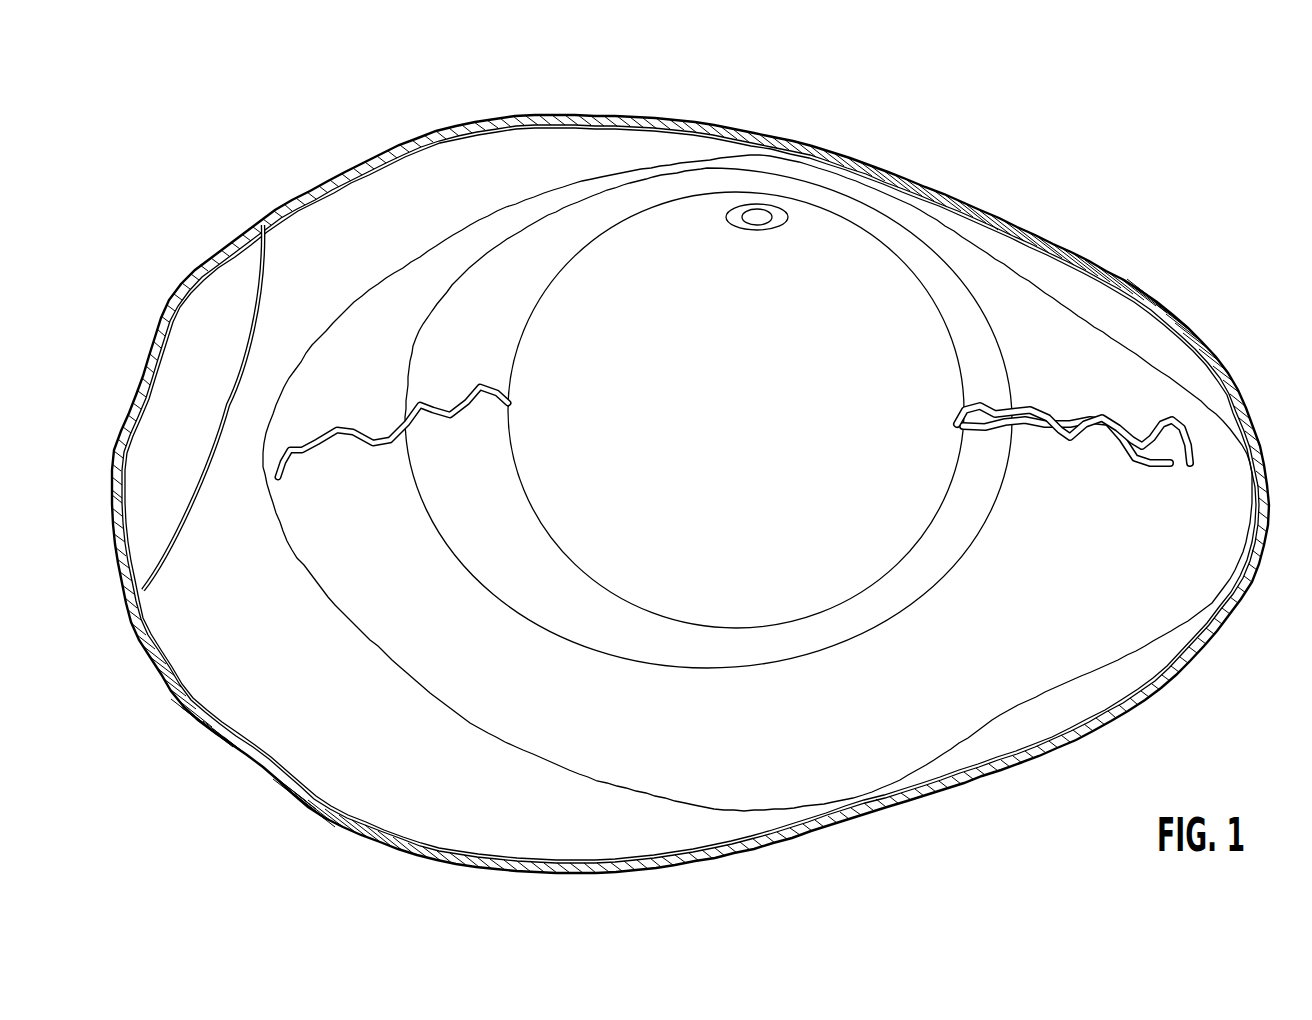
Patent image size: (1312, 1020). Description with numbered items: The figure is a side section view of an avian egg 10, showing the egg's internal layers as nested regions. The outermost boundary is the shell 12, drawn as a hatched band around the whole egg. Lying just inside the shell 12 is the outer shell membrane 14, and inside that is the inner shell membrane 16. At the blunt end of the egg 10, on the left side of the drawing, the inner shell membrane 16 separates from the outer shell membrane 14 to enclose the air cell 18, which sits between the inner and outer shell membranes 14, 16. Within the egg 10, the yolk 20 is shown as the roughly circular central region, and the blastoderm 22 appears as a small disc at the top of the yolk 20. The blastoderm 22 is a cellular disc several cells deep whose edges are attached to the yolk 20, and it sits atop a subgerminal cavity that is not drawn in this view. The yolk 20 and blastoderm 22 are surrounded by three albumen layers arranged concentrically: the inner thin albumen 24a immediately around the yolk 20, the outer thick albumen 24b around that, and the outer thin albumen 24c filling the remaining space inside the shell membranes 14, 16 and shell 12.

The avian egg 10 is at (985, 165).
The shell 12 is at (1200, 342).
The outer shell membrane 14 is at (130, 473).
The inner shell membrane 16 is at (238, 352).
The air cell 18 is at (140, 537).
The yolk 20 is at (607, 223).
The blastoderm 22 is at (752, 205).
The inner thin albumen 24a is at (957, 288).
The outer thick albumen 24b is at (945, 707).
The outer thin albumen 24c is at (412, 802).